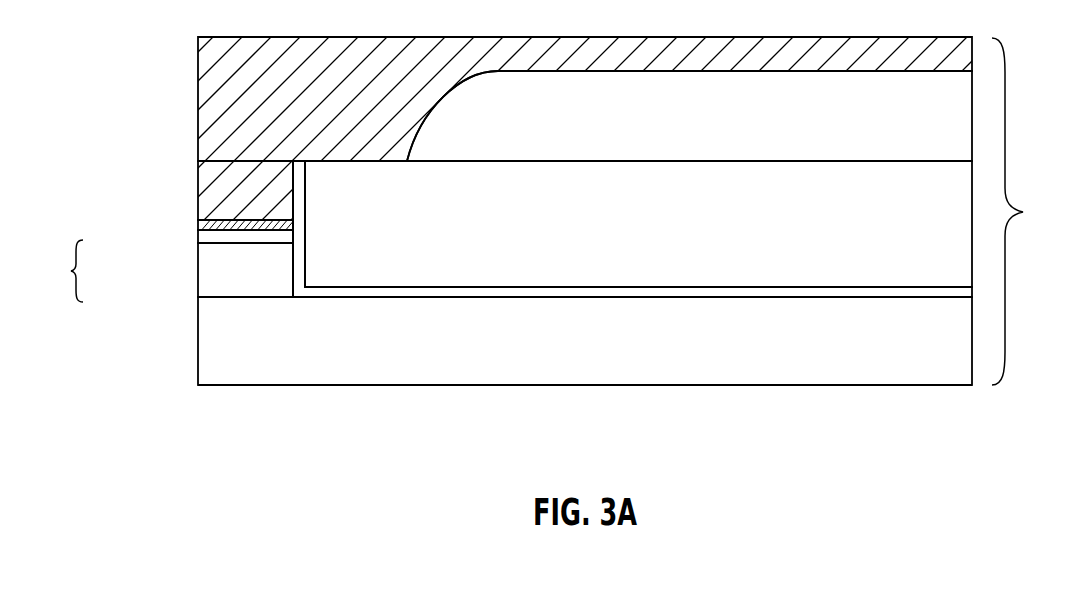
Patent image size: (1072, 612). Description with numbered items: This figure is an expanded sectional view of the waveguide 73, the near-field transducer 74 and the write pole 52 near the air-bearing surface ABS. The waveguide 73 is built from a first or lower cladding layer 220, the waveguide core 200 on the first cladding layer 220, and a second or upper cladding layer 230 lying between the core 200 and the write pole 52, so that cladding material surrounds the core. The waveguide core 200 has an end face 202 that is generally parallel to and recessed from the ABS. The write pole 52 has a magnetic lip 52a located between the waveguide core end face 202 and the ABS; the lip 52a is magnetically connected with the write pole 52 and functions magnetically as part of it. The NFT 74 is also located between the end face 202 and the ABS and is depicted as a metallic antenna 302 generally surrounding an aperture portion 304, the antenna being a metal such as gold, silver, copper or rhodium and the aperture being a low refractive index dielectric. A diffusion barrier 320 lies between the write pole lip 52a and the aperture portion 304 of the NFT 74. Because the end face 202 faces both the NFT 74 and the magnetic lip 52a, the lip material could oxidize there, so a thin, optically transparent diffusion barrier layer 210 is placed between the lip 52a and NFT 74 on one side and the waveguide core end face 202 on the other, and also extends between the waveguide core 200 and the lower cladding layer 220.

The write pole 52 is at (588, 36).
The lip 52a is at (198, 183).
The diffusion barrier 320 is at (198, 223).
The aperture portion 304 is at (198, 237).
The metallic antenna 302 is at (198, 270).
The near-field transducer (NFT) 74 is at (60, 271).
The diffusion barrier layer 210 is at (300, 268).
The end face 202 is at (296, 233).
The waveguide core 200 is at (655, 243).
The second or upper cladding layer 230 is at (655, 131).
The first or lower cladding layer 220 is at (655, 353).
The air-bearing surface ABS is at (198, 343).
The waveguide 73 is at (1027, 211).